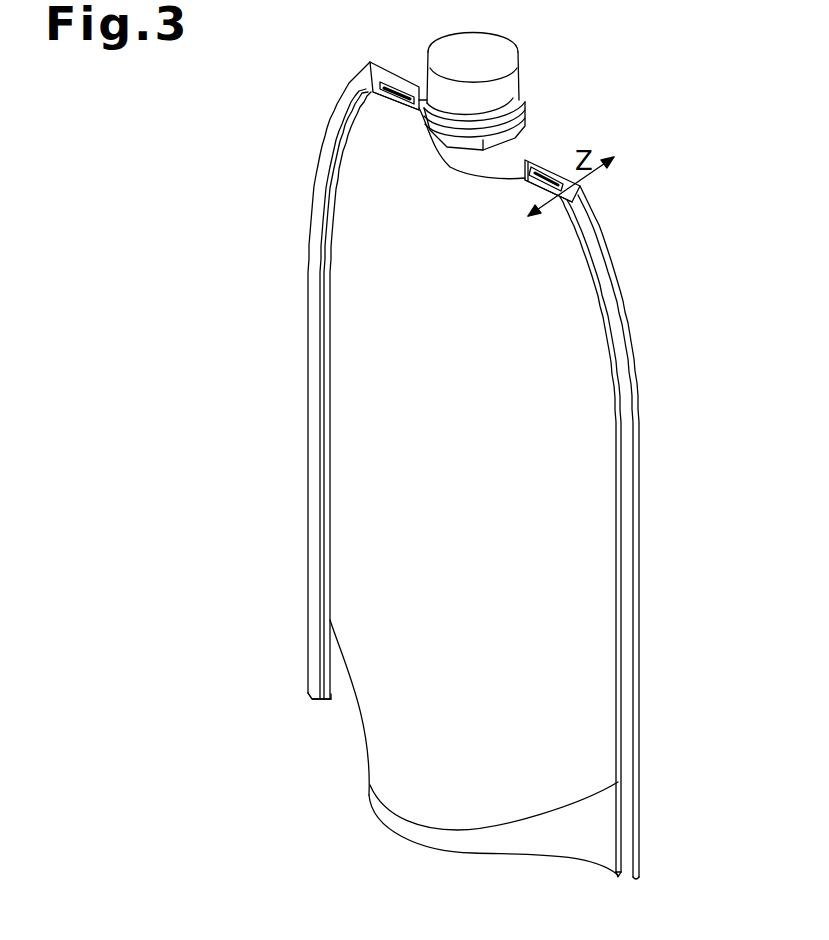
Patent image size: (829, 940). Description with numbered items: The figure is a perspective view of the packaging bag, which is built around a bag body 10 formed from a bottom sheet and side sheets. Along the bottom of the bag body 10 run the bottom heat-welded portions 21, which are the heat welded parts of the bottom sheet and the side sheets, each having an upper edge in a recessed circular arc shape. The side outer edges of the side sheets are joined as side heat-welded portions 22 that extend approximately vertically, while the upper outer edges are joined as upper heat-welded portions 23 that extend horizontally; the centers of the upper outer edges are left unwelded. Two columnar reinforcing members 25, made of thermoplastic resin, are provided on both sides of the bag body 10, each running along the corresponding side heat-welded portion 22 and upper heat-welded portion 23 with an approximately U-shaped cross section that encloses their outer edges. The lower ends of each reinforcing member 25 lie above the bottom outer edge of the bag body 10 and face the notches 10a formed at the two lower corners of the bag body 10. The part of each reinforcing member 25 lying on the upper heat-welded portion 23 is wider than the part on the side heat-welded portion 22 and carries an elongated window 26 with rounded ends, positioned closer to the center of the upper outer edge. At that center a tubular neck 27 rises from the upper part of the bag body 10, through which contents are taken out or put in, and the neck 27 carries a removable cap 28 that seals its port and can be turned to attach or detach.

The bag body 10 is at (490, 478).
The notch 10a is at (328, 702).
The bottom heat-welded portion 21 is at (562, 850).
The side heat-welded portion 22 is at (326, 386).
The upper heat-welded portion 23 is at (410, 108).
The reinforcing member 25 is at (310, 295).
The window 26 is at (396, 88).
The neck 27 is at (512, 82).
The cap 28 is at (498, 42).